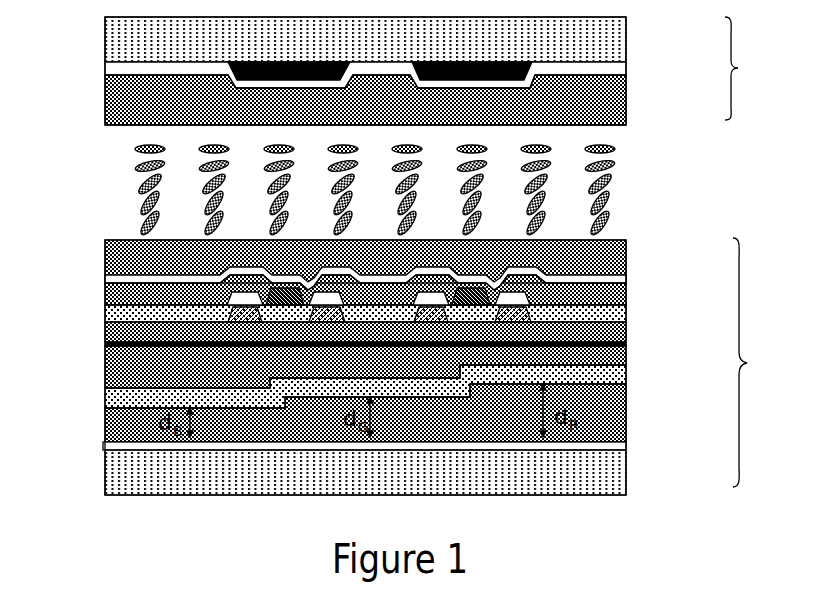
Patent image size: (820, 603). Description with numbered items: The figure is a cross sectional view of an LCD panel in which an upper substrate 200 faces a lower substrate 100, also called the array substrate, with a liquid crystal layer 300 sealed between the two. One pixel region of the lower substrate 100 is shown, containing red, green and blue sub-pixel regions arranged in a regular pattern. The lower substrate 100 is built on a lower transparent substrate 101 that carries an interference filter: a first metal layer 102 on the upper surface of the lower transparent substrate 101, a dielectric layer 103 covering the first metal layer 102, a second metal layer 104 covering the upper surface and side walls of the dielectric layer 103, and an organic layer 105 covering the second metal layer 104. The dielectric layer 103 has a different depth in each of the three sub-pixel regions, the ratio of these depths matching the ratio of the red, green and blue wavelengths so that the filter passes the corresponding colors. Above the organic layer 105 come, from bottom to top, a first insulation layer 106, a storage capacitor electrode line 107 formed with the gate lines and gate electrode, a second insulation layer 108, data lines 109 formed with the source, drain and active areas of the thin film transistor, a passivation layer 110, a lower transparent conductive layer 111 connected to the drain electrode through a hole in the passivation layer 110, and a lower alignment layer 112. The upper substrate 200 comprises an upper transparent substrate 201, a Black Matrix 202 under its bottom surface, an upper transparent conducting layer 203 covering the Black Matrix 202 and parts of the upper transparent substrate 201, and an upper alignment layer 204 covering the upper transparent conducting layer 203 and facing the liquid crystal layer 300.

The lower substrate 100 is at (758, 362).
The lower transparent substrate 101 is at (627, 478).
The first metal layer 102 is at (627, 447).
The dielectric layer 103 is at (627, 425).
The second metal layer 104 is at (627, 378).
The organic layer 105 is at (627, 357).
The first insulation layer 106 is at (627, 335).
The storage capacitor electrode line 107 is at (105, 368).
The second insulation layer 108 is at (627, 313).
The data lines 109 is at (287, 302).
The passivation layer 110 is at (105, 300).
The lower transparent conductive layer 111 is at (105, 280).
The lower alignment layer 112 is at (105, 255).
The upper substrate 200 is at (753, 68).
The upper transparent substrate 201 is at (627, 36).
The Black Matrix 202 is at (230, 70).
The upper transparent conducting layer 203 is at (627, 68).
The upper alignment layer 204 is at (627, 110).
The liquid crystal layer 300 is at (630, 197).